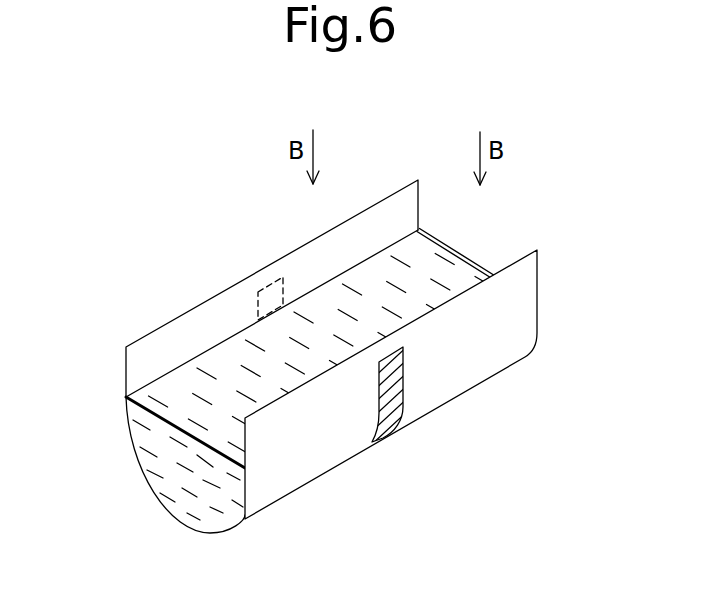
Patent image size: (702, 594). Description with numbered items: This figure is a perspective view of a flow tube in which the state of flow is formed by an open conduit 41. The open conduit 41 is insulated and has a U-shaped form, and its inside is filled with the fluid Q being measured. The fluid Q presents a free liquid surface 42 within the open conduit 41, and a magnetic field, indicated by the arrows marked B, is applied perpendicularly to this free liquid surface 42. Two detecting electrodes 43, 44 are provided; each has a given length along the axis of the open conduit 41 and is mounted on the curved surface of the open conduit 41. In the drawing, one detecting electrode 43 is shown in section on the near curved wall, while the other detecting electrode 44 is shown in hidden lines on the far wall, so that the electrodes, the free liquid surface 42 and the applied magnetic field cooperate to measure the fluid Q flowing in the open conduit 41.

The open conduit 41 is at (472, 380).
The free liquid surface 42 is at (138, 410).
The detecting electrode 43 is at (385, 436).
The detecting electrode 44 is at (267, 288).
The fluid Q is at (204, 528).